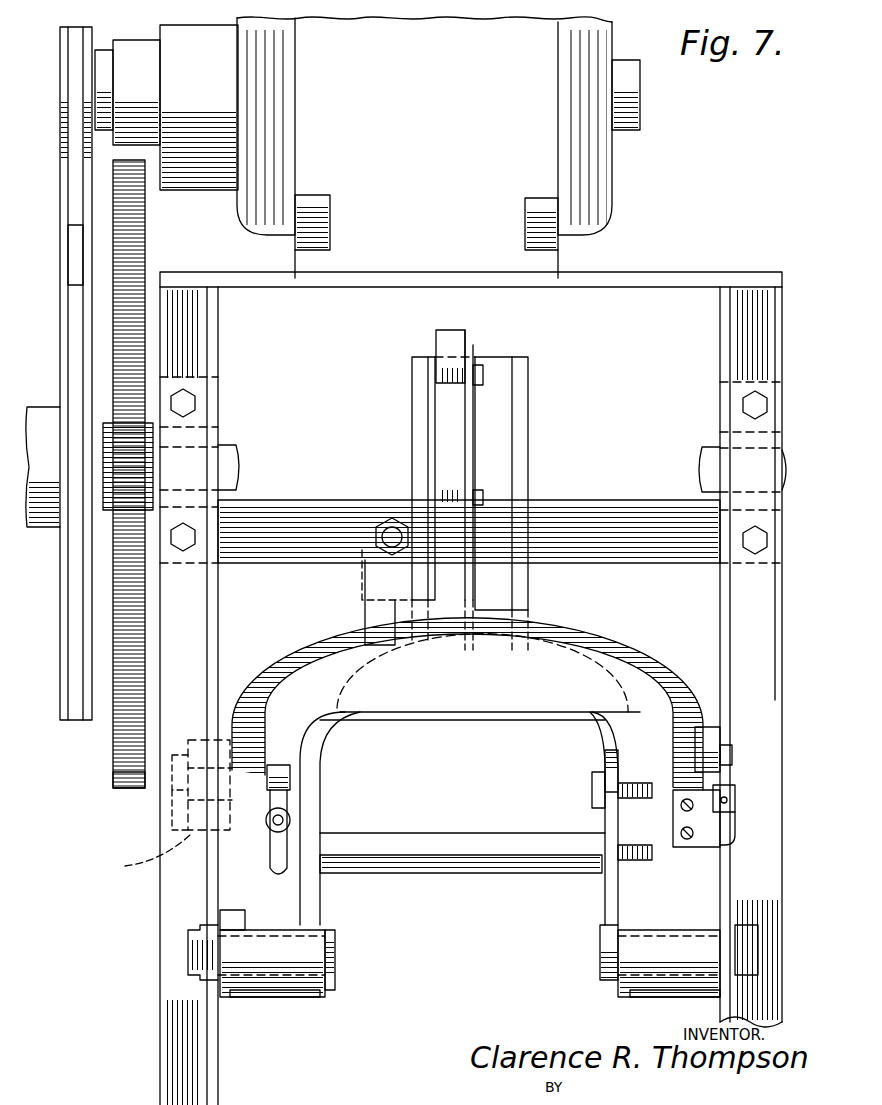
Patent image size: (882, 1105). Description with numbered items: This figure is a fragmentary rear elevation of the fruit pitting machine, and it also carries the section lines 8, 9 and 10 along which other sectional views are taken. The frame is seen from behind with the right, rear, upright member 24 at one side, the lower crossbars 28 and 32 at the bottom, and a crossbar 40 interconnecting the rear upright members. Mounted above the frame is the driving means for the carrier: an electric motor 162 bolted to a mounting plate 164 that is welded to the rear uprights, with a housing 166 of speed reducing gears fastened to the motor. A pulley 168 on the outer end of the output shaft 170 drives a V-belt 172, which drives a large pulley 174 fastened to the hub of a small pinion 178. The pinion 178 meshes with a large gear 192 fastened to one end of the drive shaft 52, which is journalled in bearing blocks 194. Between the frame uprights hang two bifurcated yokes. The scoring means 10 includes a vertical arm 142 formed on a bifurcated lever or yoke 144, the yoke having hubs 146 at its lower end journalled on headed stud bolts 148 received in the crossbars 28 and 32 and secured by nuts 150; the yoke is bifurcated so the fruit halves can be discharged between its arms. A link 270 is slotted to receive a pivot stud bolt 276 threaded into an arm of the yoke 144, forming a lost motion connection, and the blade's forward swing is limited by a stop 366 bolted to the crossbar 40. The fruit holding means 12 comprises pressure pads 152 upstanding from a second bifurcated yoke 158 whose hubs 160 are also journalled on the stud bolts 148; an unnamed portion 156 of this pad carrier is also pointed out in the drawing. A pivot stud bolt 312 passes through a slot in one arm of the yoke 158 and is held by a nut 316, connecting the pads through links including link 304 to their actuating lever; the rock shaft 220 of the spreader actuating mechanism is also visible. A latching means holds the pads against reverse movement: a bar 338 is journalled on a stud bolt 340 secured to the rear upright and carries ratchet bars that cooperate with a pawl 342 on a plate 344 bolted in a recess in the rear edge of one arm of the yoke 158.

The combined fruit-flesh severing and spreading units 8 is at (470, 278).
The section line 9— 9 is at (355, 307).
The fruit-flesh severing or scoring means 10 is at (445, 300).
The fruit retaining, pressing or holding means 12 is at (542, 350).
The right, rear, upright member 24 is at (165, 820).
The crossbar 28 is at (735, 990).
The crossbar 32 is at (185, 1000).
The crossbar 40 is at (663, 565).
The drive shaft 52 is at (228, 446).
The vertical arm 142 is at (445, 343).
The bifurcated lever or yoke 144 is at (345, 712).
The hubs 146 is at (300, 997).
The headed stud bolts 148 is at (335, 986).
The nuts 150 is at (188, 945).
The pressure pads 152 is at (414, 409).
The bracket lower portion 156 is at (528, 598).
The bifurcated carrier arm or yoke 158 is at (300, 648).
The hubs 160 is at (246, 997).
The electric motor 162 is at (612, 183).
The mounting plate 164 is at (642, 272).
The housing 166 is at (190, 180).
The pulley 168 is at (60, 44).
The output shaft 170 is at (112, 78).
The V-belt 172 is at (72, 197).
The large pulley 174 is at (60, 720).
The small pinion 178 is at (183, 390).
The large pinion or gear 192 is at (113, 780).
The bearing blocks 194 is at (745, 396).
The rock shaft 220 is at (462, 875).
The link 270 is at (603, 824).
The pivot stud bolt 276 is at (592, 780).
The link 304 is at (126, 857).
The pivot stud bolt 312 is at (165, 800).
The nut 316 is at (290, 777).
The bar 338 is at (715, 740).
The stud bolt 340 is at (685, 745).
The pawl 342 is at (732, 790).
The plate 344 is at (728, 842).
The stop 366 is at (376, 535).